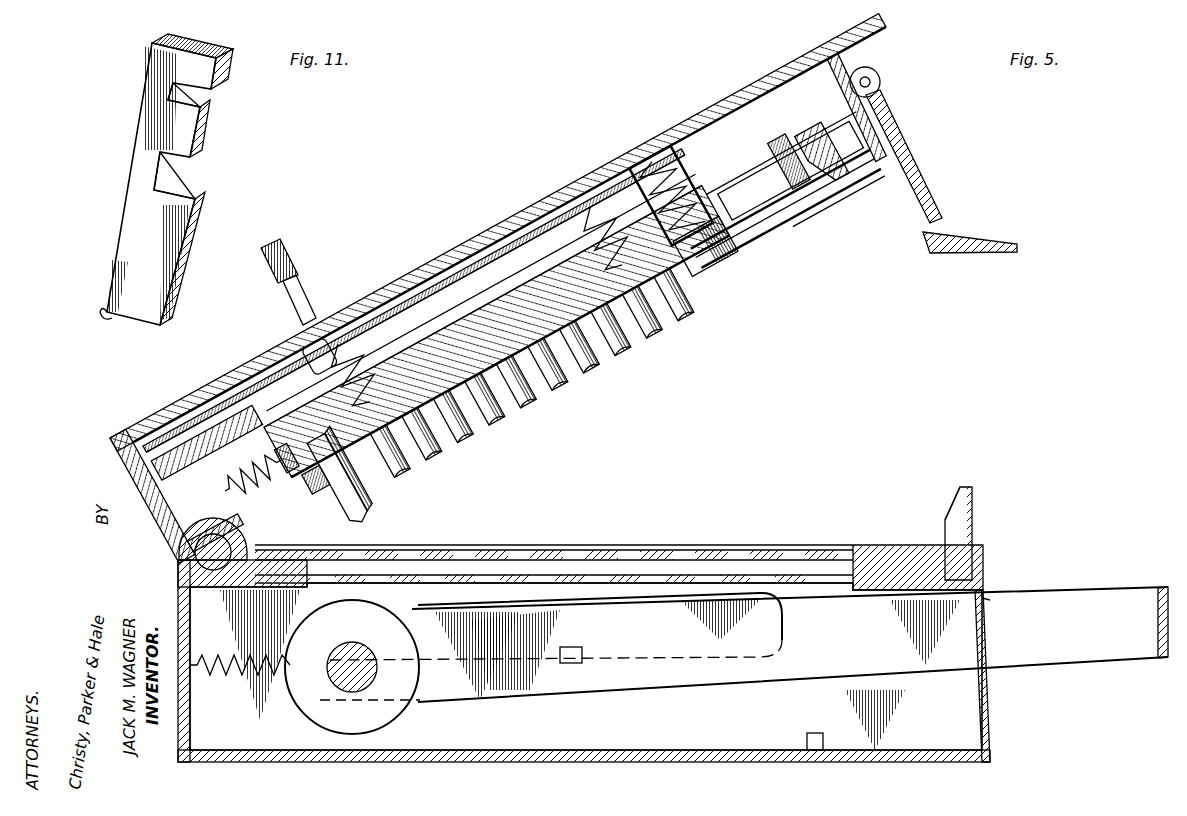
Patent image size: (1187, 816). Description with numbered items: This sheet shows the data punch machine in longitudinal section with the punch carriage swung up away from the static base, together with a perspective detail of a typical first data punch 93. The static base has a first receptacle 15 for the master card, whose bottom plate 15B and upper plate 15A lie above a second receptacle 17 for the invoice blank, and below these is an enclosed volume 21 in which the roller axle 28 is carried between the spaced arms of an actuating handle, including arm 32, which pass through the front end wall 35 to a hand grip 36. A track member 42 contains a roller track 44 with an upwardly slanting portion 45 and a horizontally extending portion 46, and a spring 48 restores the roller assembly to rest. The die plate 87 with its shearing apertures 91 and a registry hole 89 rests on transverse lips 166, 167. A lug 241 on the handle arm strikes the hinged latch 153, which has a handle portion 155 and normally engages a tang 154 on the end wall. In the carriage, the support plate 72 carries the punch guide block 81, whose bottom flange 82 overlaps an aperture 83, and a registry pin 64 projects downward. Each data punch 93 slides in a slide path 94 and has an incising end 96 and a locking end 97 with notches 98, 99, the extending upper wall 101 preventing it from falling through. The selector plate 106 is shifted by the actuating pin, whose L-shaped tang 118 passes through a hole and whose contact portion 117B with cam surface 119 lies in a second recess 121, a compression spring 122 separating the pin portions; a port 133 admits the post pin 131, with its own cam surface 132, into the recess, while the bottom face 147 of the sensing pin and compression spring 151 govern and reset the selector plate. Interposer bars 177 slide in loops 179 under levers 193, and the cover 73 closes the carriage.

In FIG. 11, the data punch 93 is at (166, 166).
In FIG. 5, the data punch 93 is at (650, 322).
In FIG. 11, the incising end 96 is at (105, 312).
In FIG. 5, the incising end 96 is at (537, 403).
In FIG. 11, the locking end 97 is at (200, 62).
In FIG. 11, the notch 98 is at (208, 112).
In FIG. 11, the notch 99 is at (180, 172).
In FIG. 11, the extending upper wall 101 is at (216, 87).
In FIG. 5, the upper housing cover 73 is at (885, 18).
In FIG. 5, the second recess 121 is at (847, 120).
In FIG. 5, the contact portion 117B is at (820, 152).
In FIG. 5, the cam surface 119 is at (720, 197).
In FIG. 5, the compression spring 122 is at (795, 172).
In FIG. 5, the port 133 is at (850, 188).
In FIG. 5, the L-shaped tang 118 is at (765, 233).
In FIG. 5, the bottom flange 82 is at (745, 252).
In FIG. 5, the bottom face 147 is at (712, 278).
In FIG. 5, the hinged latch 153 is at (945, 222).
In FIG. 5, the handle portion 155 is at (1005, 243).
In FIG. 5, the selector plate 106 is at (502, 312).
In FIG. 5, the lever 193 is at (290, 245).
In FIG. 5, the metallic loop 179 is at (275, 375).
In FIG. 5, the interposer bar 177 is at (218, 400).
In FIG. 5, the support plate 72 is at (272, 435).
In FIG. 5, the compression spring 151 is at (225, 462).
In FIG. 5, the aperture 83 is at (300, 495).
In FIG. 5, the registry pin 64 is at (360, 505).
In FIG. 5, the punch guide block 81 is at (450, 406).
In FIG. 5, the slide path 94 is at (597, 360).
In FIG. 5, the cam surface 132 is at (952, 500).
In FIG. 5, the post pin 131 is at (970, 505).
In FIG. 5, the upwardly slanting portion 45 is at (400, 612).
In FIG. 5, the roller track 44 is at (493, 618).
In FIG. 5, the horizontally extending portion 46 is at (560, 603).
In FIG. 5, the first receptacle 15 is at (627, 545).
In FIG. 5, the die plate 87 is at (728, 576).
In FIG. 5, the second receptacle 17 is at (782, 566).
In FIG. 5, the upper platen plate 15A is at (820, 547).
In FIG. 5, the bottom plate 15B is at (853, 558).
In FIG. 5, the shearing aperture 91 is at (572, 583).
In FIG. 5, the transverse lip 166 is at (323, 594).
In FIG. 5, the registry hole 89 is at (353, 589).
In FIG. 5, the transverse lip 167 is at (785, 606).
In FIG. 5, the spring 48 is at (215, 662).
In FIG. 5, the roller axle 28 is at (335, 676).
In FIG. 5, the lug 241 is at (575, 665).
In FIG. 5, the arm 32 is at (632, 680).
In FIG. 5, the tang 154 is at (995, 630).
In FIG. 5, the hand grip 36 is at (1160, 620).
In FIG. 5, the enclosed volume 21 is at (970, 700).
In FIG. 5, the front end wall 35 is at (988, 736).
In FIG. 5, the track member 42 is at (645, 745).